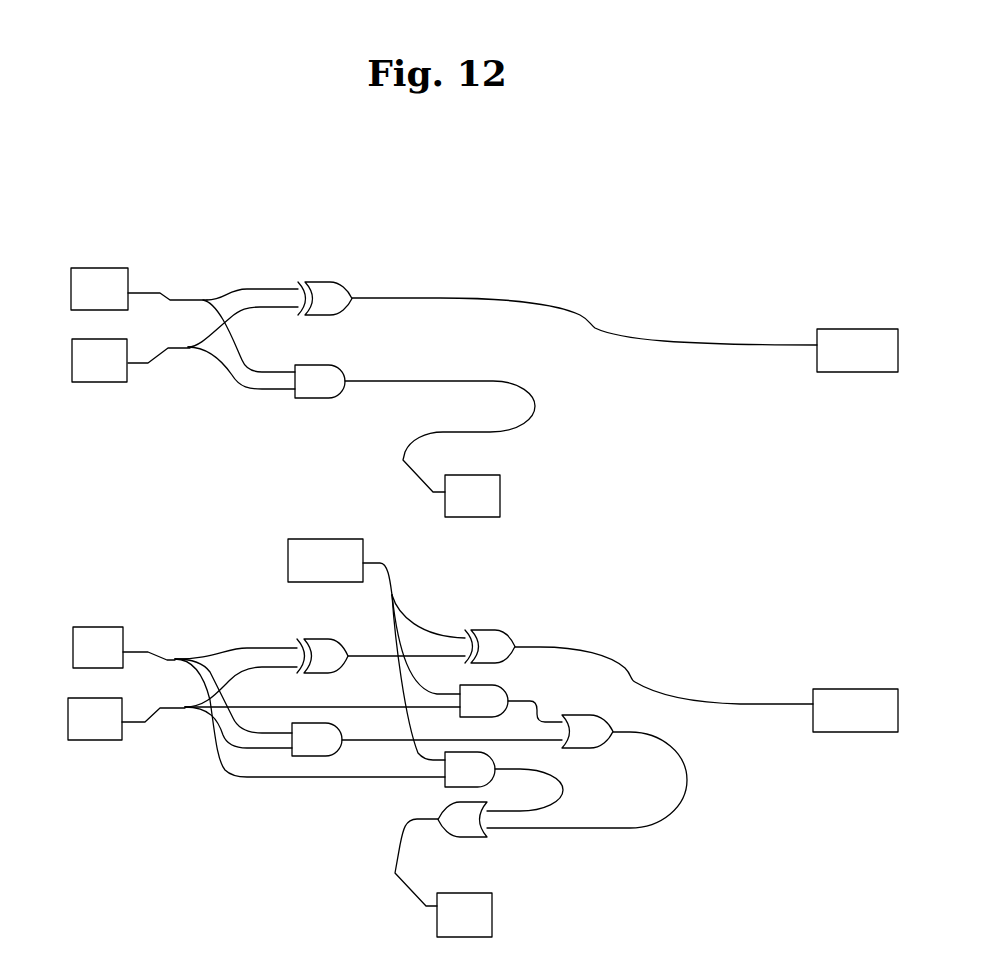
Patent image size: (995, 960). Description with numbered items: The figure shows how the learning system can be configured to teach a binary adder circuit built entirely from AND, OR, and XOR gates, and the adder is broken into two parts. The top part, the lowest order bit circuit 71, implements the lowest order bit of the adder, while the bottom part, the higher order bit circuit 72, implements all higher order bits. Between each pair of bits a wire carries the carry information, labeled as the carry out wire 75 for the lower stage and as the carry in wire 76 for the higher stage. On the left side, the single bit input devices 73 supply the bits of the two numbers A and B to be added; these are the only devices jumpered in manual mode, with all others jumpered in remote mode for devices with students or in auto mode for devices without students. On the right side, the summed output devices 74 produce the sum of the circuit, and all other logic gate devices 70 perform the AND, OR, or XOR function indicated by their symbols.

The logic gate devices 70 is at (343, 280).
The lowest order bit circuit 71 is at (510, 258).
The higher order bit circuit 72 is at (655, 603).
The single bit input devices 73 is at (113, 260).
The summed output devices 74 is at (847, 323).
The carry out wire 75 is at (507, 497).
The carry in wire 76 is at (280, 555).